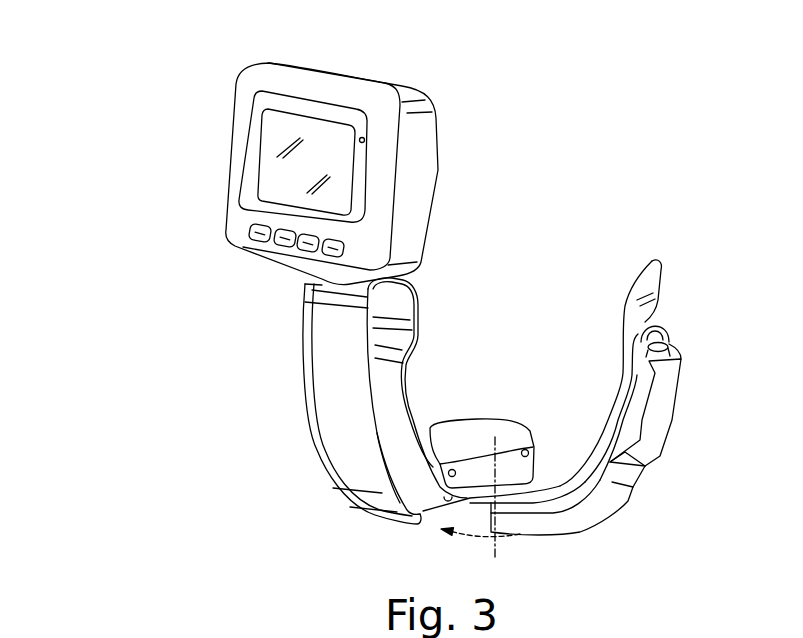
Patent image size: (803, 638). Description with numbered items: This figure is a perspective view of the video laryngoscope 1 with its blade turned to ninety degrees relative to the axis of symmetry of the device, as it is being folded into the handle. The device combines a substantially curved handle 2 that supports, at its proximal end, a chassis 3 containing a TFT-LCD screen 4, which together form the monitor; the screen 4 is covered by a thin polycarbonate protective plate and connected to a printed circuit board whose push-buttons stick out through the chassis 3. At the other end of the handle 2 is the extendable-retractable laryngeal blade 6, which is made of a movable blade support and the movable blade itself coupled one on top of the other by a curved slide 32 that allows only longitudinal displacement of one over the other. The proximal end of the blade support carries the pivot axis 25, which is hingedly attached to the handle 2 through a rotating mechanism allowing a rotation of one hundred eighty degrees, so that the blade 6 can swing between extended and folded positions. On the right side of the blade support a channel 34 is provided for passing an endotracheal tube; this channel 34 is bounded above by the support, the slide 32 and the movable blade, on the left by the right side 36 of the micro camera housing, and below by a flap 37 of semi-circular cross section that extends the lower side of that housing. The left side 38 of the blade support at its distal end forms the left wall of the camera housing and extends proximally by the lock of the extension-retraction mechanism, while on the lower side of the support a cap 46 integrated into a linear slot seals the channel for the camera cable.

The video laryngoscope 1 is at (140, 103).
The handle 2 is at (280, 413).
The chassis 3 is at (420, 145).
The screen 4 is at (277, 172).
The laryngeal blade 6 is at (688, 286).
The pivot axis 25 is at (517, 432).
The curved slide 32 is at (652, 333).
The channel 34 is at (665, 347).
The right side 36 is at (643, 368).
The flap 37 is at (648, 437).
The left side 38 is at (600, 487).
The cap 46 is at (587, 538).